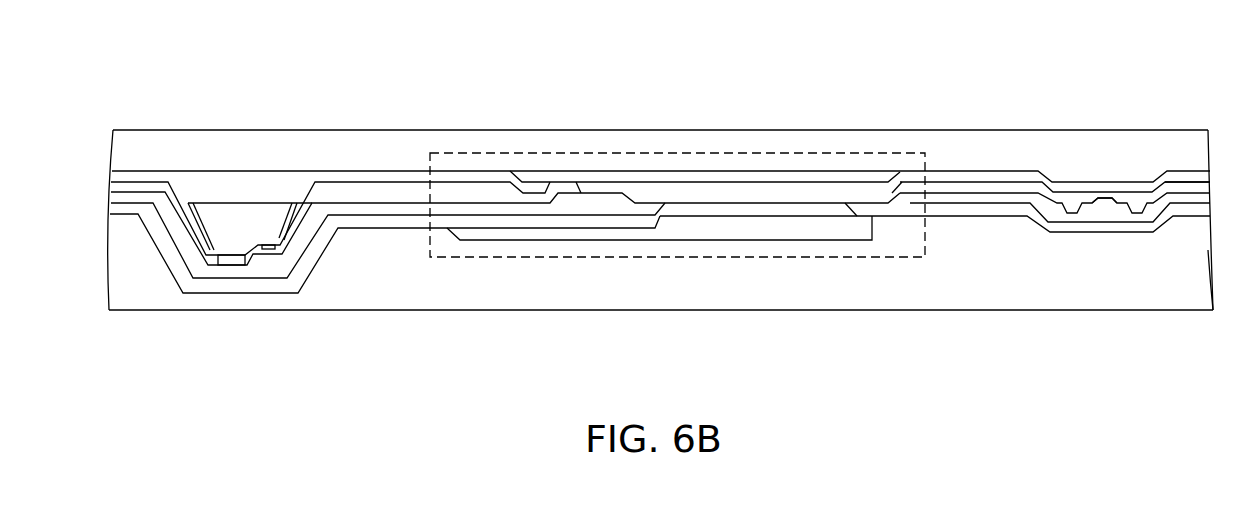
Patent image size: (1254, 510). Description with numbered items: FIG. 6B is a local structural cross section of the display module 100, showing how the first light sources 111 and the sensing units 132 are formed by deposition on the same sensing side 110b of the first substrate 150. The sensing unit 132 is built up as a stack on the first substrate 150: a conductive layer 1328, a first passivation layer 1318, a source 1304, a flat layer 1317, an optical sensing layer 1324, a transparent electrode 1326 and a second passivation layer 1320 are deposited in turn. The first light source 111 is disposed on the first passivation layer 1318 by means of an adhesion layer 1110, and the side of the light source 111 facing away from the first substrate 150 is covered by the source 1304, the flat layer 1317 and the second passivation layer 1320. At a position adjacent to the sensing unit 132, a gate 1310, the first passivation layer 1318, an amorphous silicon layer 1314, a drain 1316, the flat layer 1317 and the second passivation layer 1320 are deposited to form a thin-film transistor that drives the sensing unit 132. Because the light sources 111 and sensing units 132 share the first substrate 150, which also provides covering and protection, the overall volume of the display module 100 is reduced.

The display module 100 is at (203, 67).
The sensing side 110b is at (938, 324).
The first light source 111 is at (261, 231).
The sensing unit 132 is at (540, 260).
The first substrate 150 is at (958, 140).
The adhesion layer 1110 is at (245, 195).
The source 1304 is at (725, 200).
The gate 1310 is at (1088, 177).
The amorphous silicon layer 1314 is at (1120, 197).
The drain 1316 is at (1192, 185).
The flat layer 1317 is at (1028, 145).
The first passivation layer 1318 is at (358, 180).
The second passivation layer 1320 is at (770, 295).
The optical sensing layer 1324 is at (800, 212).
The transparent electrode 1326 is at (850, 220).
The conductive layer 1328 is at (583, 178).